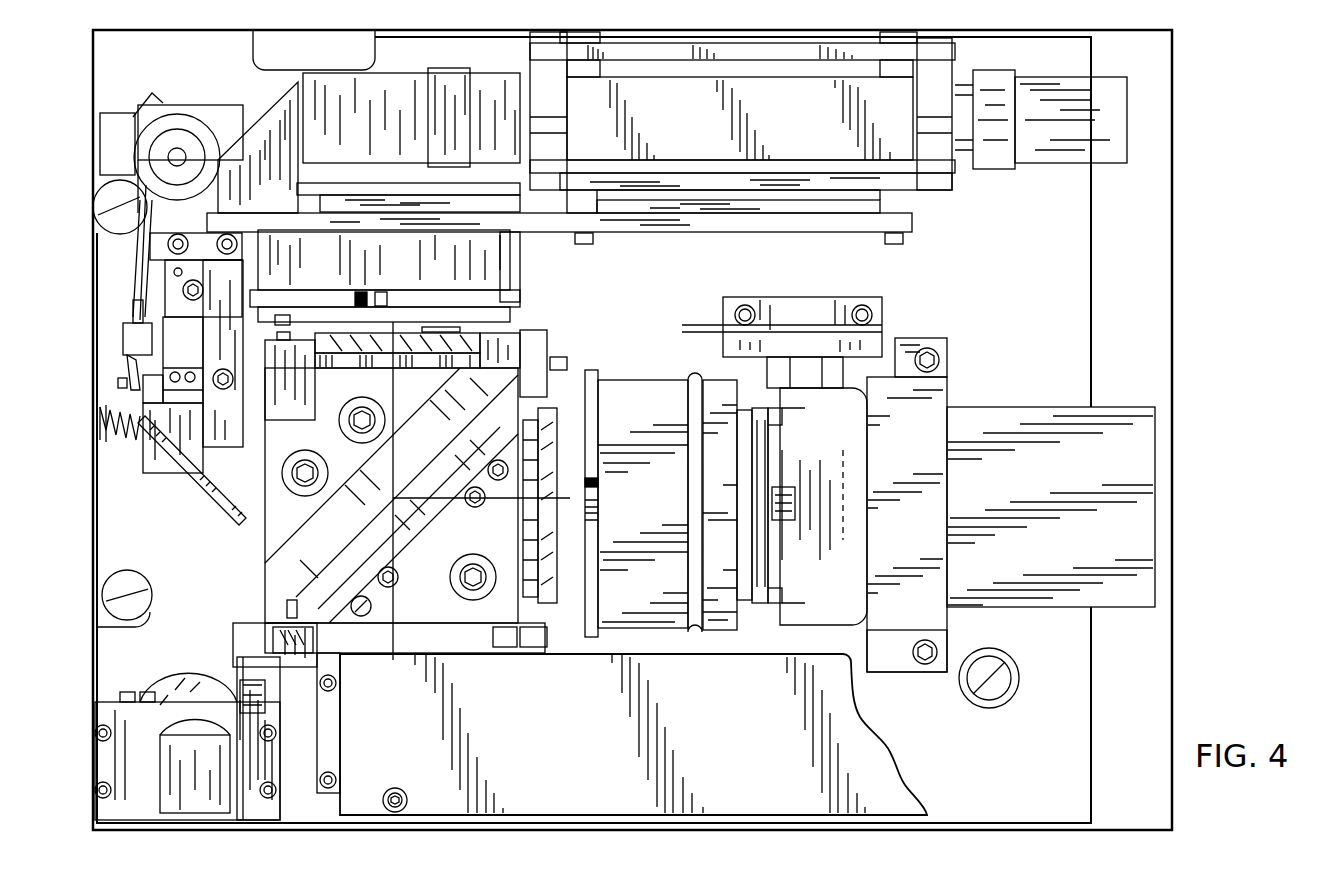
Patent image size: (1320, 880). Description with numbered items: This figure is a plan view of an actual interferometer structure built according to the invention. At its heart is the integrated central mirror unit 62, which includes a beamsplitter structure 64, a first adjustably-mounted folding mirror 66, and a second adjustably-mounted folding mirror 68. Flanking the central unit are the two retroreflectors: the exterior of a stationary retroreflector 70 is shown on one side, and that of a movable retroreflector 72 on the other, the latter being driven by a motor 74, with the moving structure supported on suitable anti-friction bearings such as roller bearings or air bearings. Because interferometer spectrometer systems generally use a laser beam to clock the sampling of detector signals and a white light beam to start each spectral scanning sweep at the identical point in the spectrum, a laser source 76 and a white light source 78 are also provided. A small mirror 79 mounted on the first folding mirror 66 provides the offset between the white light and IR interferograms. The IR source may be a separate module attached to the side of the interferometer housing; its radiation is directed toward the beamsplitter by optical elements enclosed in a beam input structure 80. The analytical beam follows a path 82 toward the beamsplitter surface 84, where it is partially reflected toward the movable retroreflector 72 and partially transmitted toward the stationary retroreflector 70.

The integrated central mirror unit 62 is at (463, 645).
The beamsplitter structure 64 is at (496, 392).
The first adjustably-mounted folding mirror 66 is at (363, 340).
The second adjustably-mounted folding mirror 68 is at (547, 538).
The stationary retroreflector 70 is at (510, 258).
The movable retroreflector 72 is at (717, 627).
The motor 74 is at (838, 492).
The laser source 76 is at (805, 126).
The white light source 78 is at (178, 682).
The small mirror 79 is at (440, 327).
The beam input structure 80 is at (608, 752).
The path 82 is at (393, 563).
The beamsplitter surface 84 is at (392, 480).